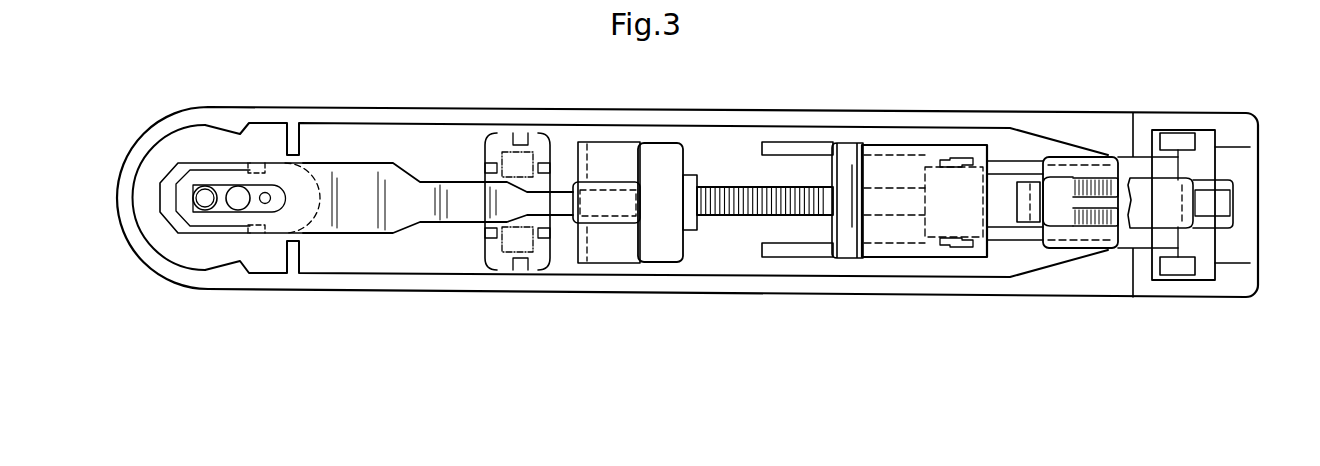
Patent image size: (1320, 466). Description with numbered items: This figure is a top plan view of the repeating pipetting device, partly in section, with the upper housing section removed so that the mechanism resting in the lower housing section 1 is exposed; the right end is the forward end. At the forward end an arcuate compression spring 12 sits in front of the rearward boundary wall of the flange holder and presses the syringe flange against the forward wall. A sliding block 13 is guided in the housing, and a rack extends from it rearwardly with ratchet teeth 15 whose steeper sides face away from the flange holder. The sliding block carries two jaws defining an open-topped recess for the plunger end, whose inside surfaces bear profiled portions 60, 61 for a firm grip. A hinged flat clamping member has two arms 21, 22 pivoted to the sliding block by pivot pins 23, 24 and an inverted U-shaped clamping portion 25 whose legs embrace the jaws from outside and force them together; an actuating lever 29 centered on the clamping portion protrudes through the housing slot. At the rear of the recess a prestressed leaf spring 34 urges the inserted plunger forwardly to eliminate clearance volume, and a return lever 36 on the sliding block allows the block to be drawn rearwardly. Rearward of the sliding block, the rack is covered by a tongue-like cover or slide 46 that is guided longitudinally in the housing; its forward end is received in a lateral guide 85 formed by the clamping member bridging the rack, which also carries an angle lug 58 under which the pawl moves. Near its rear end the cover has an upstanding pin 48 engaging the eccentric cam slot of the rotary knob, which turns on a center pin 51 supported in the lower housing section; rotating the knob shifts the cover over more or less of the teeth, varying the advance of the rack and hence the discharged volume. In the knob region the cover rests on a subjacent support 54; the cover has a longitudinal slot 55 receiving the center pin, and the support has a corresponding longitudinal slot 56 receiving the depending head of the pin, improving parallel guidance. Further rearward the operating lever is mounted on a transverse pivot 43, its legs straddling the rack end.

The lower housing section 1 is at (466, 104).
The arcuate compression spring 12 is at (1195, 162).
The sliding block 13 is at (938, 225).
The ratchet teeth 15 is at (735, 207).
The arm of clamping member 21 is at (1012, 162).
The arm of clamping member 22 is at (1020, 241).
The pivot pin 23 is at (957, 158).
The pivot pin 24 is at (953, 248).
The clamping portion 25 is at (1053, 170).
The actuating lever 29 is at (1157, 190).
The leaf spring 34 is at (1022, 205).
The return lever 36 is at (847, 250).
The transverse pivot 43 is at (528, 250).
The tongue-like cover or slide 46 is at (390, 182).
The upstanding pin 48 is at (268, 207).
The center pin 51 is at (200, 203).
The subjacent support 54 is at (178, 163).
The longitudinal slot 55 is at (217, 183).
The longitudinal slot 56 is at (275, 182).
The angle lug 58 is at (607, 224).
The profiled portion 60 is at (1103, 180).
The profiled portion 61 is at (1102, 222).
The lateral guide 85 is at (603, 187).